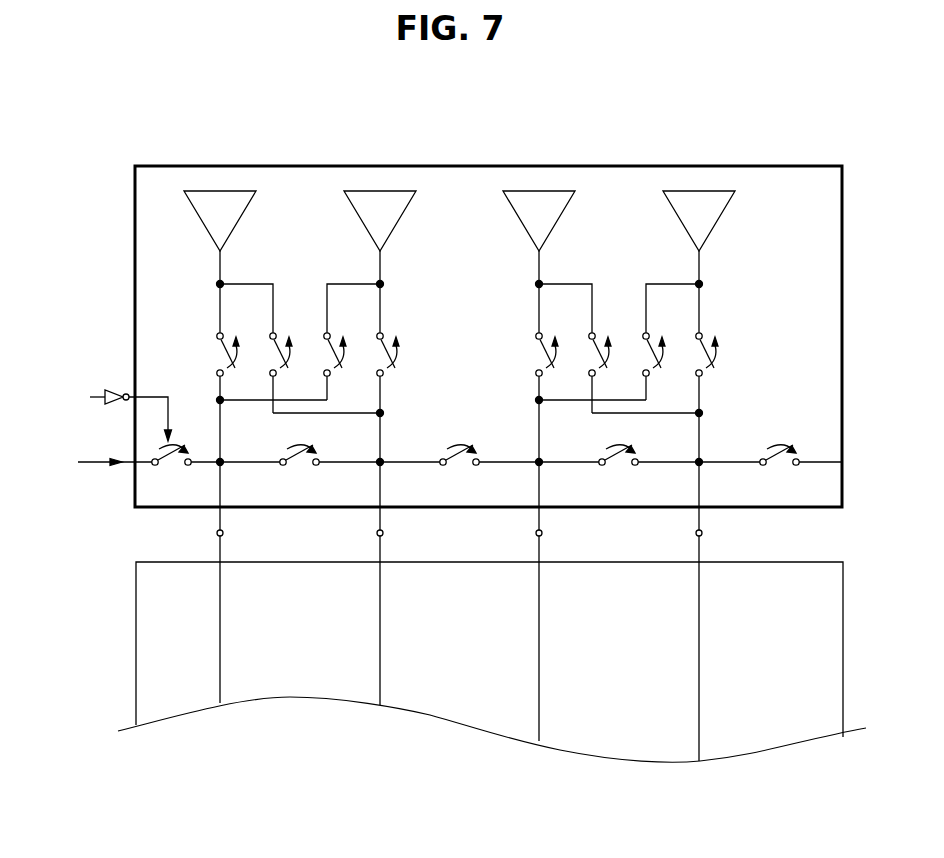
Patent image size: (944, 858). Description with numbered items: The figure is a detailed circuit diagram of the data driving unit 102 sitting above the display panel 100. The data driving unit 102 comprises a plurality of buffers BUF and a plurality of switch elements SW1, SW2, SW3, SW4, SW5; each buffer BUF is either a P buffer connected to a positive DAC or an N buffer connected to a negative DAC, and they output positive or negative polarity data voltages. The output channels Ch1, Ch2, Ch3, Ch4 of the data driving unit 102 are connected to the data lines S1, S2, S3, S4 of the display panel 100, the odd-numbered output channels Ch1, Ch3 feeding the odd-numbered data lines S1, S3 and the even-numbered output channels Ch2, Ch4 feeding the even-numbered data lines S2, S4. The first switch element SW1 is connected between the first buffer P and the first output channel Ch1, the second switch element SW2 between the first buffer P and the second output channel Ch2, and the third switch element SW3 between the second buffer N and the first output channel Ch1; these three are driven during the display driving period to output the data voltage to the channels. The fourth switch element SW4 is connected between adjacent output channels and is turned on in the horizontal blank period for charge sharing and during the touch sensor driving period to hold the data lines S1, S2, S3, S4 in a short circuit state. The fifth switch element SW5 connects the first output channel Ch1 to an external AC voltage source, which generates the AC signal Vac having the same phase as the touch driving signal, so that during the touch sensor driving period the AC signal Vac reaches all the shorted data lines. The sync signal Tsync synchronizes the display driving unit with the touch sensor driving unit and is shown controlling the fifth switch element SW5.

The data driving unit 102 is at (488, 165).
The display panel 100 is at (136, 641).
The buffer BUF is at (556, 221).
The first switch element SW1 is at (475, 342).
The second switch element SW2 is at (448, 342).
The third switch element SW3 is at (502, 342).
The fourth switch element SW4 is at (539, 466).
The fifth switch element SW5 is at (171, 466).
The AC signal Vac is at (443, 462).
The sync signal Tsync is at (104, 414).
The first output channel Ch1 is at (237, 534).
The second output channel Ch2 is at (397, 534).
The third output channel Ch3 is at (556, 534).
The fourth output channel Ch4 is at (716, 534).
The data line S1 is at (232, 619).
The data line S2 is at (392, 620).
The data line S3 is at (551, 638).
The data line S4 is at (711, 648).